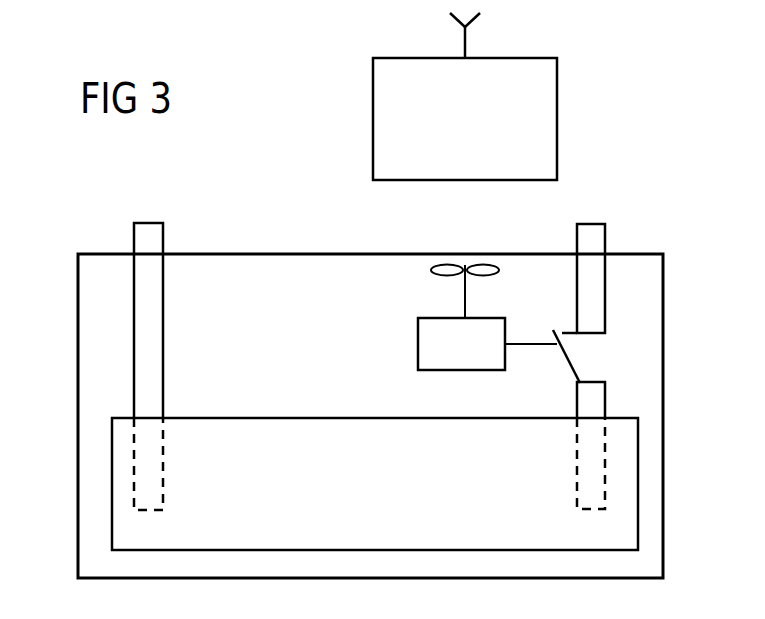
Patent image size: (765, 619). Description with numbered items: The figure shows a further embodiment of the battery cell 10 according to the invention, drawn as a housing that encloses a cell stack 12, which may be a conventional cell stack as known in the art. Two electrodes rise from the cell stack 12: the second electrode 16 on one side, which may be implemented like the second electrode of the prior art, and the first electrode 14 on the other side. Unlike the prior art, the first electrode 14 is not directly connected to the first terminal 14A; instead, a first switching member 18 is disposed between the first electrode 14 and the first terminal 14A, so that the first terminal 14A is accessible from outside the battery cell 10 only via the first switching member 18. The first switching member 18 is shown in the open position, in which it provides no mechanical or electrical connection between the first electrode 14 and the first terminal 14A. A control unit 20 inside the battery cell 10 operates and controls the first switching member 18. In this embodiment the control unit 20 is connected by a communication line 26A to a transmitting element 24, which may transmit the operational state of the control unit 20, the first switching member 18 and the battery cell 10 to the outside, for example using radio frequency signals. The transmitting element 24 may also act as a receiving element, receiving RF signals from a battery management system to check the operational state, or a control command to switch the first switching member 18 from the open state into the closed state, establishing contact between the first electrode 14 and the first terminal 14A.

The battery cell 10 is at (285, 254).
The cell stack 12 is at (300, 418).
The first electrode 14 is at (603, 382).
The first terminal 14A is at (590, 224).
The second electrode 16 is at (148, 223).
The first switching member 18 is at (567, 372).
The control unit 20 is at (418, 345).
The transmitting element 24 is at (483, 264).
The communication line 26A is at (465, 297).